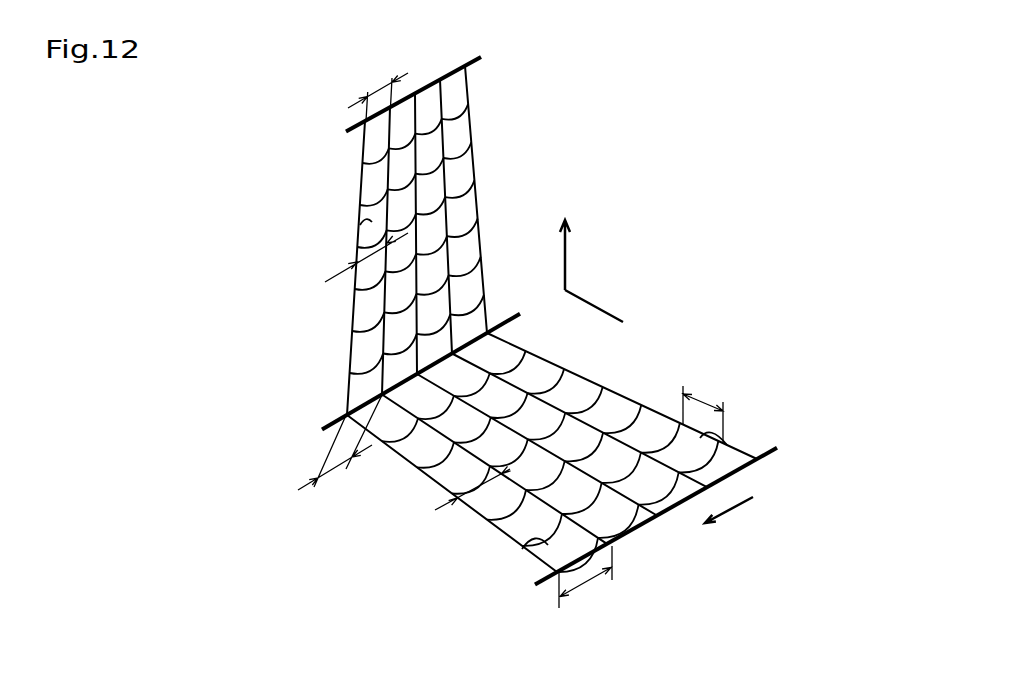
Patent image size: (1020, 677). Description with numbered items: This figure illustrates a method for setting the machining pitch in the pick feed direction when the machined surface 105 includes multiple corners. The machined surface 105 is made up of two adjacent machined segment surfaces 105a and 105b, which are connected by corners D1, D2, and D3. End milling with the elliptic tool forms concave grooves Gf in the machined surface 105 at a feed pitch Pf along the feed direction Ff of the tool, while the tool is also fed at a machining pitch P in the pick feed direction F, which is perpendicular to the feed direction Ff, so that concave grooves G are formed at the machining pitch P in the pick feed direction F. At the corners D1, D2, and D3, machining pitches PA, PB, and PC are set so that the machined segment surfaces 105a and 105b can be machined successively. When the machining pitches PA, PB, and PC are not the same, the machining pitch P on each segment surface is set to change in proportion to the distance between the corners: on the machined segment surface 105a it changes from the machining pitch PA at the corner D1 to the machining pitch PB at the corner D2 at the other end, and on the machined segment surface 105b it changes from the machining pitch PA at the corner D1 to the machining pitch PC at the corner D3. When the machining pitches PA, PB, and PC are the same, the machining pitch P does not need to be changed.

The machined surface 105 is at (511, 350).
The machined segment surface 105a is at (366, 236).
The machined segment surface 105b is at (523, 479).
The corner D1 is at (326, 421).
The corner D2 is at (351, 132).
The corner D3 is at (543, 589).
The concave groove G is at (364, 222).
The concave groove Gf is at (740, 439).
The machining pitch P is at (409, 383).
The machining pitch PA is at (340, 449).
The machining pitch PB is at (378, 89).
The machining pitch PC is at (585, 579).
The feed pitch Pf is at (704, 406).
The pick feed direction F is at (719, 522).
The feed direction Ff is at (585, 258).